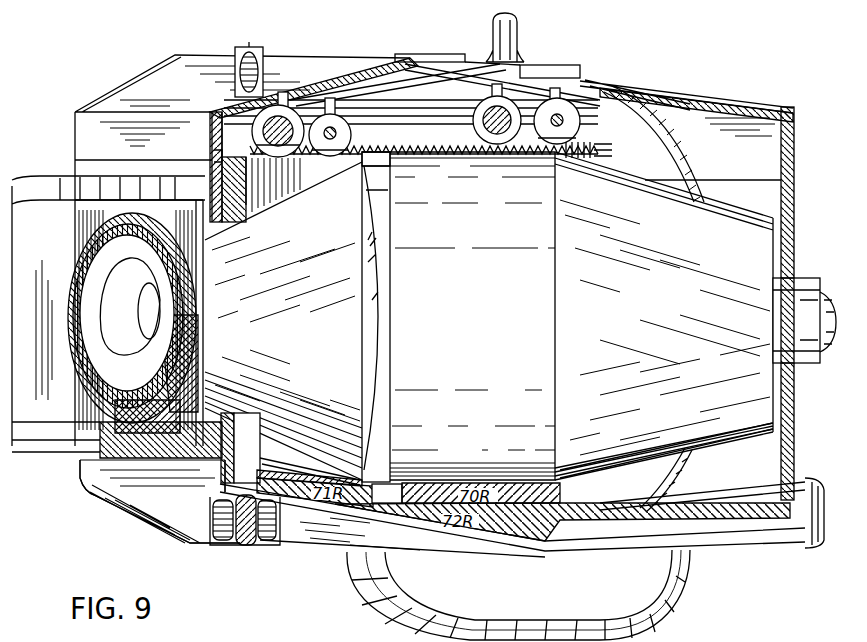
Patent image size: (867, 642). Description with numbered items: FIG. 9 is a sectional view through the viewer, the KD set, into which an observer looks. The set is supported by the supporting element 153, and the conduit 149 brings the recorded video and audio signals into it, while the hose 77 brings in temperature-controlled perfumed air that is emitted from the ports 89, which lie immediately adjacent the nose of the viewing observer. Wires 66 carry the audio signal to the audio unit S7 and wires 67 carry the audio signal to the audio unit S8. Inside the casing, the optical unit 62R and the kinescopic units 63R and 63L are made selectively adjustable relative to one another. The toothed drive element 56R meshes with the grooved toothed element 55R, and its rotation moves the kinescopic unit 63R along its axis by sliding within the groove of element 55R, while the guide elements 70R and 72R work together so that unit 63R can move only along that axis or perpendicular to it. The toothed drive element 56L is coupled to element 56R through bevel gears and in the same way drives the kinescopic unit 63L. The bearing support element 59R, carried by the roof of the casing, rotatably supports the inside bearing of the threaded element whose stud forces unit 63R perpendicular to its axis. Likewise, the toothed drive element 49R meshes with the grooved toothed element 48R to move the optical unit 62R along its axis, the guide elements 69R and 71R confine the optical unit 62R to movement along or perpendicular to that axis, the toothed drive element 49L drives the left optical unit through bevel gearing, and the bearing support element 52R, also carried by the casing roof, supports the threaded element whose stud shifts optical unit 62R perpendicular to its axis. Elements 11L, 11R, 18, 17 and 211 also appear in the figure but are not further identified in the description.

The KD set KD is at (120, 51).
The audio unit S7 is at (250, 42).
The supporting element 153 is at (522, 40).
The toothed drive element 56L is at (454, 99).
The bearing support element 59R is at (578, 122).
The wires 66 is at (668, 123).
The toothed drive element 49L is at (214, 160).
The grooved toothed element 48R is at (255, 167).
The toothed drive element 49R is at (288, 158).
The bearing support element 52R is at (380, 161).
The toothed drive element 56R is at (505, 150).
The grooved toothed element 55R is at (610, 156).
The optical unit 62R is at (301, 317).
The left lens 11L is at (145, 317).
The right lens ring 11R is at (195, 240).
The lens mount 18 is at (168, 350).
The conduit 149 is at (826, 352).
The housing band 17 is at (55, 460).
The kinescopic unit 63L is at (368, 418).
The guide element 69R is at (309, 469).
The guide element 71R is at (315, 492).
The guide element 70R is at (481, 494).
The guide element 72R is at (562, 522).
The kinescopic unit 63R is at (742, 440).
The wires 67 is at (680, 472).
The hose 77 is at (806, 480).
The ports 89 is at (266, 542).
The audio unit S8 is at (242, 533).
The tube 211 is at (660, 566).